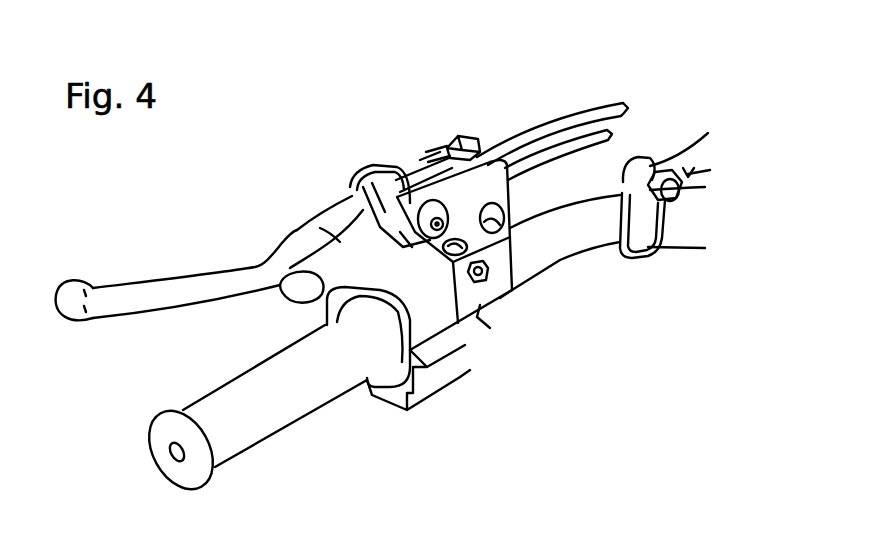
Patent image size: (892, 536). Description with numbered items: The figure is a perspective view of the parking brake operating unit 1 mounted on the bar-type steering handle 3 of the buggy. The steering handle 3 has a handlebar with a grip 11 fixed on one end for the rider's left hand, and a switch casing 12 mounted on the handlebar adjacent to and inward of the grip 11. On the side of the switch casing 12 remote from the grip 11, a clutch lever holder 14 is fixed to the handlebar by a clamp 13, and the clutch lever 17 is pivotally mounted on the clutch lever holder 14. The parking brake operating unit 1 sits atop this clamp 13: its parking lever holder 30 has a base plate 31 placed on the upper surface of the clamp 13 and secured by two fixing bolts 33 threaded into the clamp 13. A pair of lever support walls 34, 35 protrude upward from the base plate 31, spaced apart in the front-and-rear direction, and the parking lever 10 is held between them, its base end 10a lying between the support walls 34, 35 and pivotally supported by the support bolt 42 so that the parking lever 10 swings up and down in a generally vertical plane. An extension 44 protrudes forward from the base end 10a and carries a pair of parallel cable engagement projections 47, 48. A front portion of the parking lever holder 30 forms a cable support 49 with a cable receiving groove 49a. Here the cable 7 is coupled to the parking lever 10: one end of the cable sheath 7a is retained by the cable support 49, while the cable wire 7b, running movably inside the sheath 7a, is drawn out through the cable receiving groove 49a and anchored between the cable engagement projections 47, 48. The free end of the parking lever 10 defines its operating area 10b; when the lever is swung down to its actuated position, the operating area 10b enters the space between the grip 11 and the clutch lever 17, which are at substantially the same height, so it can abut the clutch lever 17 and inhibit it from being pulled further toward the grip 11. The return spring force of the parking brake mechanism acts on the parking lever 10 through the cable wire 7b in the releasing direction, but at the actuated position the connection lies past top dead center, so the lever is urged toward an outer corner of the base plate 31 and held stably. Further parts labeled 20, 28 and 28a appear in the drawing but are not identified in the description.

The parking brake operating unit 1 is at (271, 313).
The bar-type steering handle 3 is at (685, 237).
The cable 7 is at (539, 108).
The cable sheath 7a is at (557, 127).
The cable wire 7b is at (425, 157).
The parking lever 10 is at (330, 252).
The base end 10a is at (396, 160).
The operating area 10b is at (280, 273).
The grip 11 is at (270, 422).
The switch casing 12 is at (408, 407).
The clamp 13 is at (513, 292).
The clutch lever holder 14 is at (334, 234).
The clutch lever 17 is at (124, 290).
The bolt 20 is at (481, 283).
The outer cable 28 is at (603, 111).
The outer cable end 28a is at (582, 145).
The parking lever holder 30 is at (517, 198).
The base plate 31 is at (418, 268).
The fixing bolts 33 is at (508, 232).
The lever support wall 34 is at (370, 168).
The lever support wall 35 is at (403, 158).
The support bolt 42 is at (484, 157).
The extension 44 is at (362, 213).
The cable engagement projection 47 is at (382, 188).
The cable engagement projection 48 is at (376, 165).
The cable support 49 is at (458, 140).
The cable receiving groove 49a is at (432, 150).